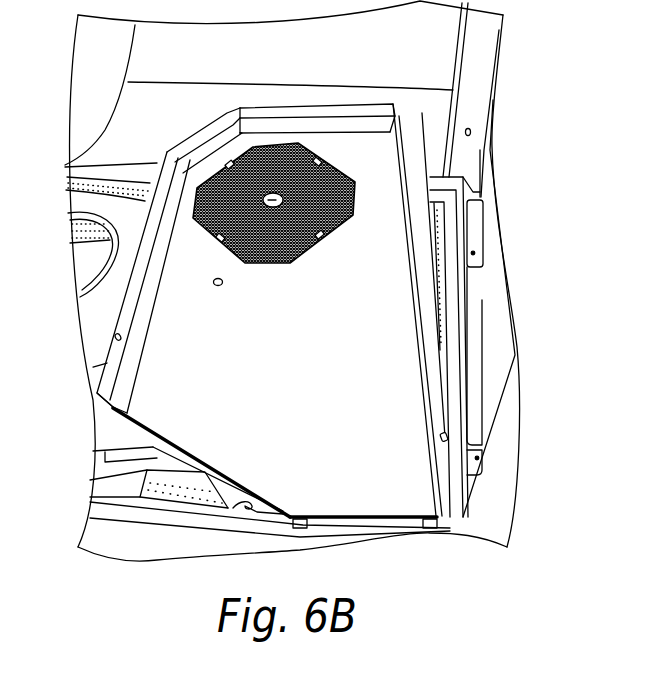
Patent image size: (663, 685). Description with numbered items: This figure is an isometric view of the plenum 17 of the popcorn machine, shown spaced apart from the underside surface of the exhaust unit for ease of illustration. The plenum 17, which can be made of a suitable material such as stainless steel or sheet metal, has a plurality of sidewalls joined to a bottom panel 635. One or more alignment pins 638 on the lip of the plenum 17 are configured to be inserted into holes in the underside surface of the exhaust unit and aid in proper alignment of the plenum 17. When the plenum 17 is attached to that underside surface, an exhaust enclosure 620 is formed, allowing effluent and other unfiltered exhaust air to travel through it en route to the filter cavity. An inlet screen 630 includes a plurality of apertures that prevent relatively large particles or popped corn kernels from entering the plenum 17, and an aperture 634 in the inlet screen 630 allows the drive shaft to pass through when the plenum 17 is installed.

The plenum 17 is at (200, 478).
The exhaust enclosure 620 is at (342, 365).
The inlet screen 630 is at (295, 160).
The aperture 634 is at (222, 166).
The bottom panel 635 is at (303, 398).
The alignment pin 638 is at (443, 445).